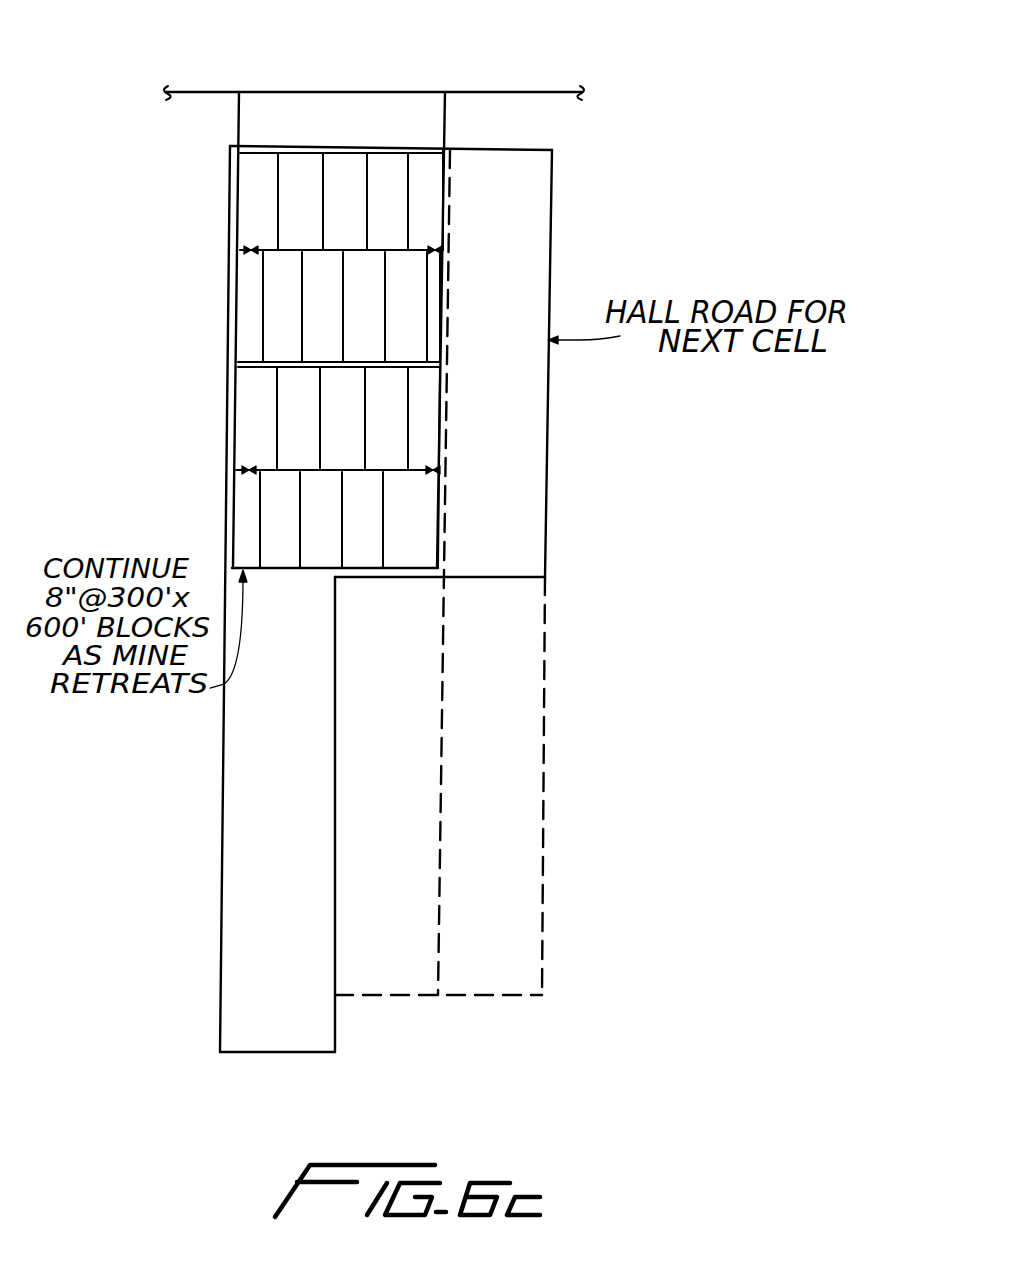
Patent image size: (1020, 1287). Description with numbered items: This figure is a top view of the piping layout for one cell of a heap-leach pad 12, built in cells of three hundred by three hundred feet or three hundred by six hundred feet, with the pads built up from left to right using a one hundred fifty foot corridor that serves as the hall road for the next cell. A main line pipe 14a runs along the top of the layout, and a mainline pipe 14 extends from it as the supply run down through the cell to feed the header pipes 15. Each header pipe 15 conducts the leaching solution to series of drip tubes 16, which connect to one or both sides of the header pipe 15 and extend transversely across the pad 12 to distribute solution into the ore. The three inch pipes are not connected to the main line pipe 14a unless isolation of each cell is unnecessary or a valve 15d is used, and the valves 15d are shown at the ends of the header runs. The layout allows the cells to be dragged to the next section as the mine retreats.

The pad 12 is at (337, 359).
The mainline pipe 14 is at (447, 123).
The main line pipe 14a is at (519, 92).
The header pipe 15 is at (393, 152).
The valve 15d is at (246, 250).
The drip tube 16 is at (340, 326).